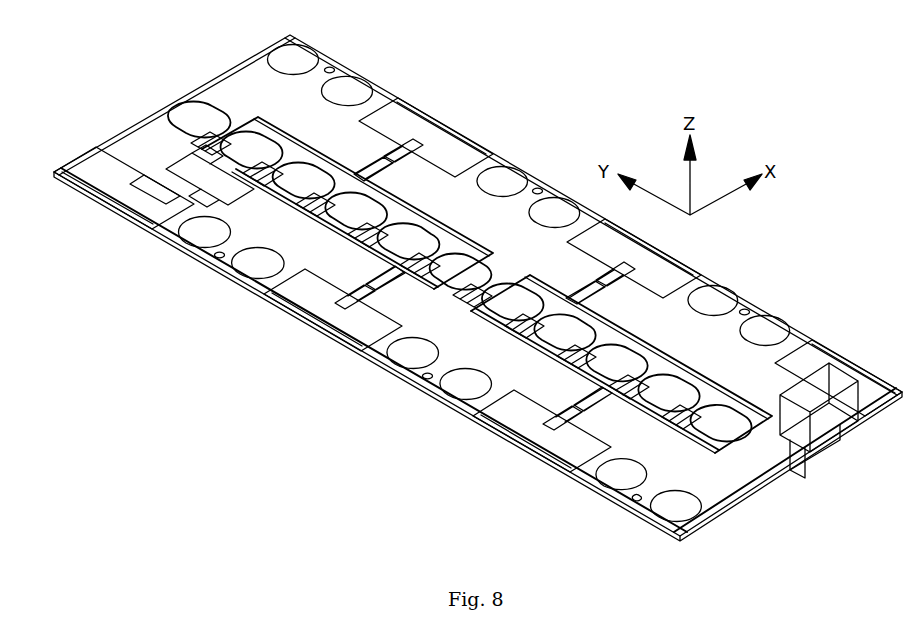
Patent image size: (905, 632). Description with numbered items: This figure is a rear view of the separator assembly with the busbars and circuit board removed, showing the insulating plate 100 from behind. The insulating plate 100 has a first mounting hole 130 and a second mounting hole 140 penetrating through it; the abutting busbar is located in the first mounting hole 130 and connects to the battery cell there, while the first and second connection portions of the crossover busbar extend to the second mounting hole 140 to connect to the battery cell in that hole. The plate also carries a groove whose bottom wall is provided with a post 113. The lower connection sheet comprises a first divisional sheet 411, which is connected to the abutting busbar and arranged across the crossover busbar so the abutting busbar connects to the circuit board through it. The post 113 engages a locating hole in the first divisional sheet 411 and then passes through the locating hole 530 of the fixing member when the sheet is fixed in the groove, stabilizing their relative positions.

The insulating plate 100 is at (236, 84).
The second mounting hole 140 is at (276, 44).
The first mounting hole 130 is at (86, 152).
The post 113 is at (180, 170).
The first divisional sheet 411 is at (118, 196).
The locating hole 530 is at (157, 196).